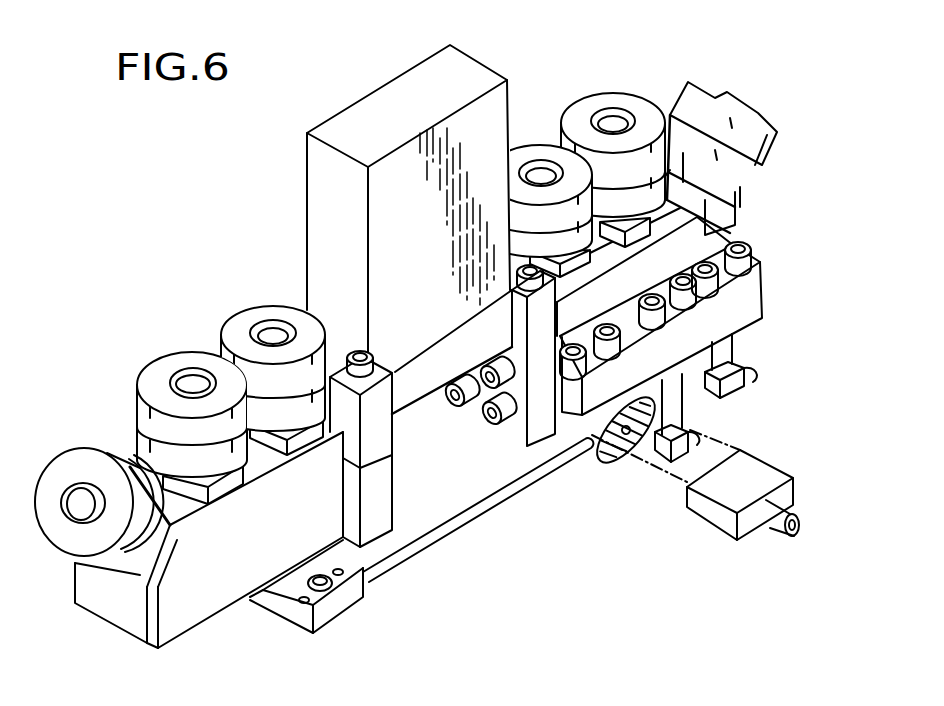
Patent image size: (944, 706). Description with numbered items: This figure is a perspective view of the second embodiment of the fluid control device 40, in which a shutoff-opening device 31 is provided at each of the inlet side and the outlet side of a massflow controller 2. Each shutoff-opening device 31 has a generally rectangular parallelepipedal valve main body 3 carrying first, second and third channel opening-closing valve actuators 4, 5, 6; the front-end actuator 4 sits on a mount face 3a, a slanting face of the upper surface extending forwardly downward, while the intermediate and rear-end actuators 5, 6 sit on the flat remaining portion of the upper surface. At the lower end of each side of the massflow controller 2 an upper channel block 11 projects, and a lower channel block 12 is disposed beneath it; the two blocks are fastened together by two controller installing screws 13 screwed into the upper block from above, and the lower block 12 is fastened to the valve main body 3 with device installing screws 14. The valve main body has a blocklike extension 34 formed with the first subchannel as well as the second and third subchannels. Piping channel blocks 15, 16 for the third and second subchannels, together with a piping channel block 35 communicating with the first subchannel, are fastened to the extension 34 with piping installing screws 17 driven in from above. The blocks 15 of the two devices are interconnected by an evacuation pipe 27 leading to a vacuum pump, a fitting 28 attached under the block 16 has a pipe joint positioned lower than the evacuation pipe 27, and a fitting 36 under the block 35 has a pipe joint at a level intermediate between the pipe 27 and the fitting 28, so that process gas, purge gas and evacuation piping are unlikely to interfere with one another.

The massflow controller 2 is at (473, 80).
The valve main body 3 is at (743, 198).
The mount face 3a is at (737, 226).
The first channel opening-closing valve actuator 4 is at (768, 128).
The second channel opening-closing valve actuator 5 is at (603, 110).
The third channel opening-closing valve actuator 6 is at (535, 157).
The upper channel block 11 is at (373, 428).
The lower channel block 12 is at (380, 502).
The controller installing screws 13 is at (366, 348).
The device installing screws 14 is at (465, 415).
The piping channel block 15 is at (683, 365).
The piping channel block 16 is at (340, 608).
The piping installing screws 17 is at (744, 251).
The evacuation pipe 27 is at (465, 517).
The fitting 28 is at (657, 457).
The shutoff-opening device 31 is at (648, 99).
The blocklike extension 34 is at (748, 295).
The piping channel block 35 is at (753, 337).
The fitting 36 is at (733, 385).
The fluid control device 40 is at (780, 334).